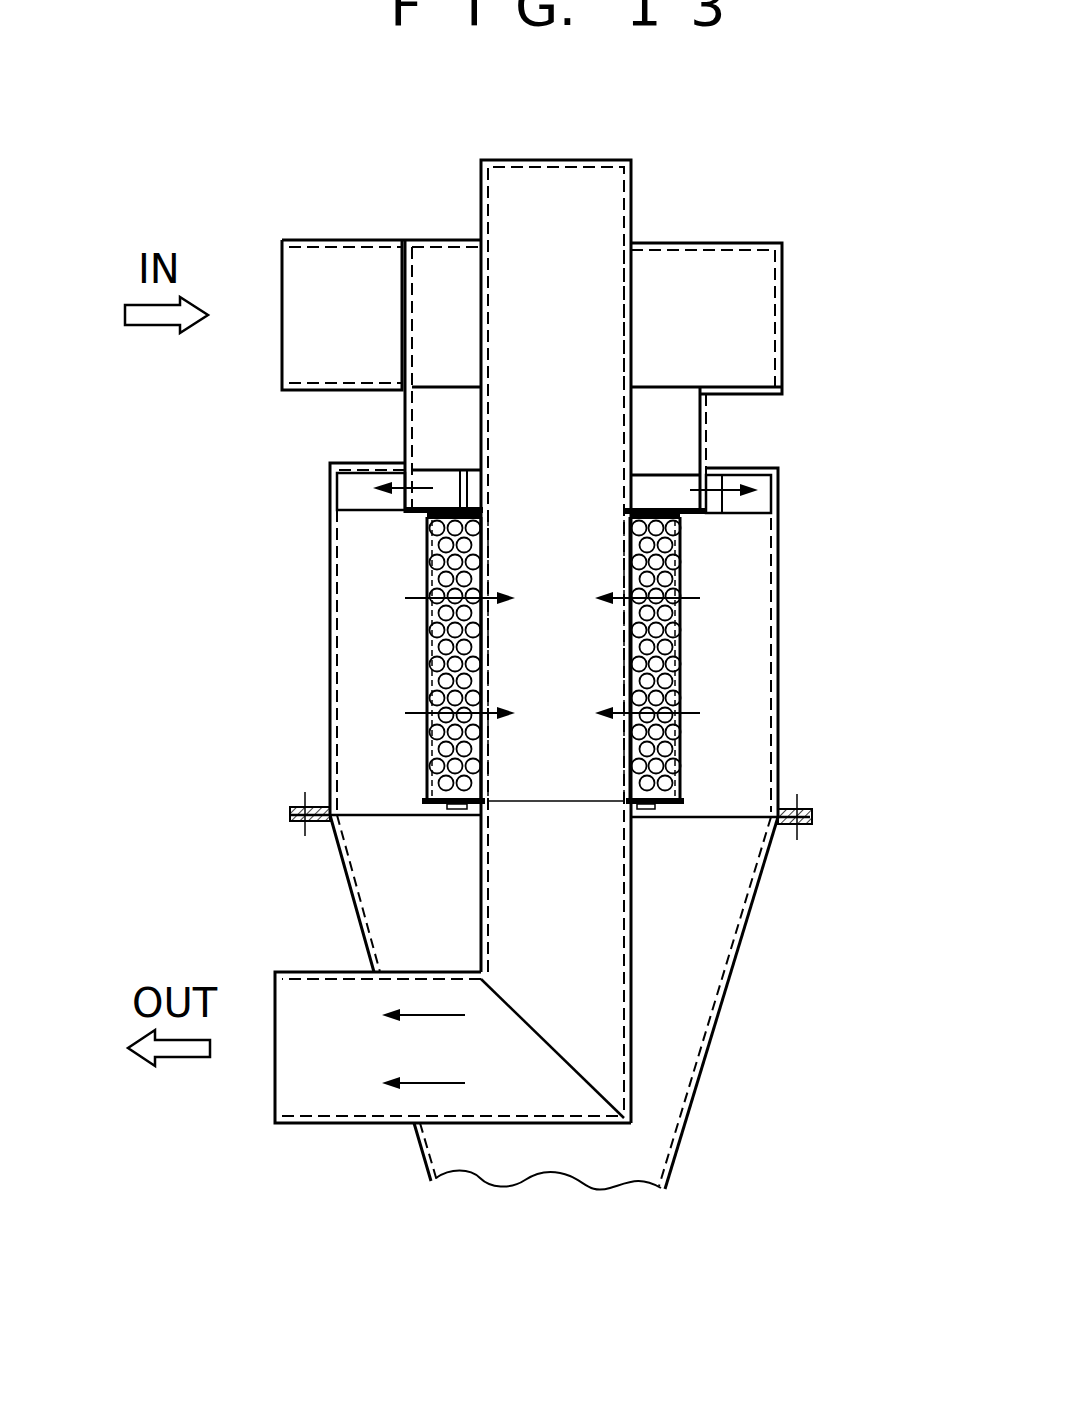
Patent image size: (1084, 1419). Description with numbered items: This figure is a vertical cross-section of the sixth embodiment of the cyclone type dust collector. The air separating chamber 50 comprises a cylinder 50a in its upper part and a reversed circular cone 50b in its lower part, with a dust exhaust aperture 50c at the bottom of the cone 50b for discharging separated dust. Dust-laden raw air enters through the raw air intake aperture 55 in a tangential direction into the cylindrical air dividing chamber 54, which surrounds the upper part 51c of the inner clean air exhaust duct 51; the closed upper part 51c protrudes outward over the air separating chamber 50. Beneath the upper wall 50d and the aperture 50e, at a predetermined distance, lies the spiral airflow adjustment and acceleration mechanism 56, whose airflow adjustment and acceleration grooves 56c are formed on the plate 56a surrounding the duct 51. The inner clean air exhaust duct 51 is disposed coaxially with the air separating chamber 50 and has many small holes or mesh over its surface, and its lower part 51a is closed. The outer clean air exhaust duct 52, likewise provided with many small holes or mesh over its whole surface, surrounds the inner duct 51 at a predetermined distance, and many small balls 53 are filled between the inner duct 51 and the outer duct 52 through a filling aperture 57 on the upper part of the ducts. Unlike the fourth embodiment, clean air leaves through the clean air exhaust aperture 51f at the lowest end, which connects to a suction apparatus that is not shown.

The air separating chamber 50 is at (396, 694).
The cylinder 50a is at (328, 600).
The reversed circular cone 50b is at (347, 888).
The dust exhaust aperture 50c is at (573, 1163).
The upper wall 50d is at (370, 464).
The aperture 50e is at (677, 472).
The inner clean air exhaust duct 51 is at (638, 216).
The lower part of inner clean air exhaust duct 51a is at (677, 645).
The upper part of inner clean air exhaust duct 51c is at (632, 330).
The clean air exhaust aperture 51f is at (287, 1078).
The outer clean air exhaust duct 52 is at (696, 741).
The small balls 53 is at (665, 697).
The cylindrical air dividing chamber 54 is at (760, 278).
The raw air intake aperture 55 is at (290, 283).
The spiral airflow adjustment and acceleration mechanism 56 is at (388, 521).
The plate 56a is at (717, 515).
The airflow adjustment and acceleration grooves 56c is at (417, 497).
The filling aperture 57 is at (430, 532).